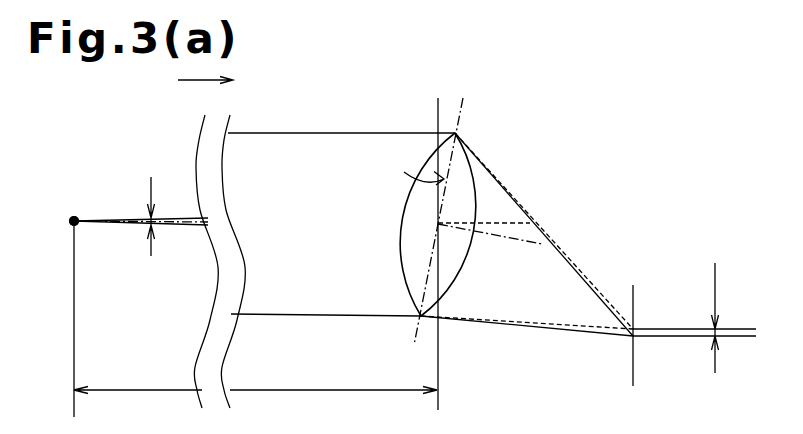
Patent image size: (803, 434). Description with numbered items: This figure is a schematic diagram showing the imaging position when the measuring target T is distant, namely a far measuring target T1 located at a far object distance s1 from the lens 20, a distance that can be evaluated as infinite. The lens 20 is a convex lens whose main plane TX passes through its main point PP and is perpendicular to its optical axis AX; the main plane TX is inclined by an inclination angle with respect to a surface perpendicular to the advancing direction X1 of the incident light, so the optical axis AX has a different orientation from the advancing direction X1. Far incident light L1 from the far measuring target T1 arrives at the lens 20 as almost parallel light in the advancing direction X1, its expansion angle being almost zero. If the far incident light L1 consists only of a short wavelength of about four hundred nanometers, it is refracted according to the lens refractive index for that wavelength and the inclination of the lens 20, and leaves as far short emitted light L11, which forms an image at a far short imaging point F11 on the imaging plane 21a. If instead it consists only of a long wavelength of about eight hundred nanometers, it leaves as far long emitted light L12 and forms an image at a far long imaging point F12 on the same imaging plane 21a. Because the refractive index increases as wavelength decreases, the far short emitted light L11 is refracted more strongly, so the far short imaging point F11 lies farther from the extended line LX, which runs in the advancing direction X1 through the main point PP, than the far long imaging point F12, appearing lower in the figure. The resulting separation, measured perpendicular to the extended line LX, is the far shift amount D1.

The lens 20 is at (472, 151).
The imaging plane 21a is at (633, 290).
The measuring target T is at (74, 215).
The far measuring target T1 is at (74, 221).
The advancing direction X1 is at (226, 79).
The far incident light L1 is at (326, 133).
The far short emitted light L11 is at (533, 221).
The far long emitted light L12 is at (566, 261).
The extended line LX is at (497, 222).
The main plane TX is at (461, 241).
The optical axis AX is at (519, 242).
The main point PP is at (438, 225).
The far short imaging point F11 is at (632, 338).
The far long imaging point F12 is at (635, 329).
The far shift amount D1 is at (736, 318).
The far object distance s1 is at (255, 381).